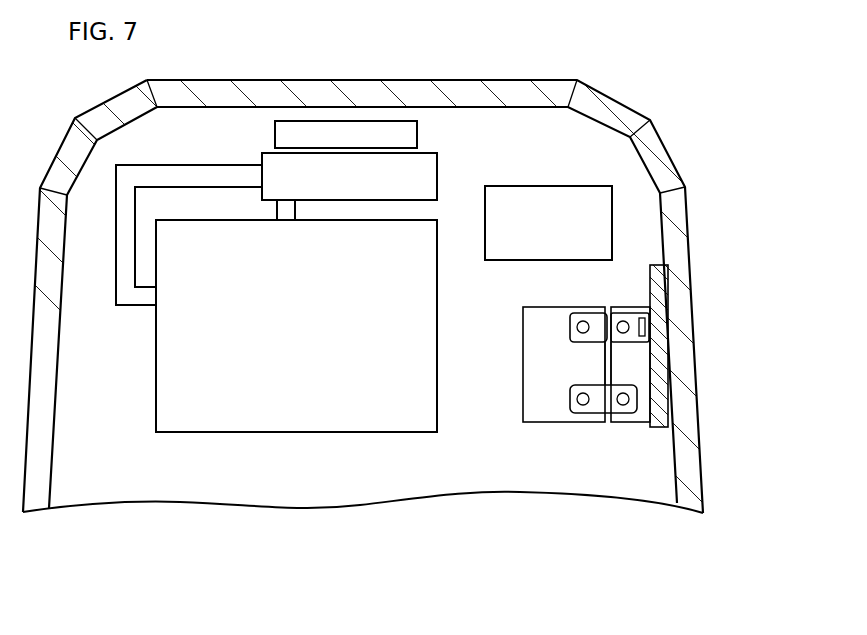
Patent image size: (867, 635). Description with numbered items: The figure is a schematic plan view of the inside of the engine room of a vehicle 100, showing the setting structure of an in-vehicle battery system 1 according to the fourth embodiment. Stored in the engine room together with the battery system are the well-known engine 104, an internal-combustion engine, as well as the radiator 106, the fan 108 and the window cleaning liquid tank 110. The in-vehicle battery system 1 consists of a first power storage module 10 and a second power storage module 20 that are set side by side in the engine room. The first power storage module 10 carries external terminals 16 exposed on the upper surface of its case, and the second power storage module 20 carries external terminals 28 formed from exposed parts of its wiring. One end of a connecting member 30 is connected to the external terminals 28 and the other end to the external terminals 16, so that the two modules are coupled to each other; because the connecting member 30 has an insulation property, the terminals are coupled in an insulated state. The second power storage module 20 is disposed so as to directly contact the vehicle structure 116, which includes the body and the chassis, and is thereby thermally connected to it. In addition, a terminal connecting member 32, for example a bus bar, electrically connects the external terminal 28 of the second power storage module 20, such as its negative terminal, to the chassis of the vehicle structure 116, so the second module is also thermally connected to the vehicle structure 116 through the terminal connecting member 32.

The in-vehicle battery system 1 is at (555, 407).
The first power storage module 10 is at (523, 396).
The external terminals 16 is at (577, 326).
The second power storage module 20 is at (632, 422).
The external terminals 28 is at (620, 321).
The connecting member 30 is at (598, 322).
The terminal connecting member 32 is at (633, 337).
The vehicle 100 is at (385, 583).
The engine 104 is at (156, 382).
The radiator 106 is at (437, 175).
The fan 108 is at (417, 133).
The window cleaning liquid tank 110 is at (572, 186).
The vehicle structure 116 is at (683, 242).